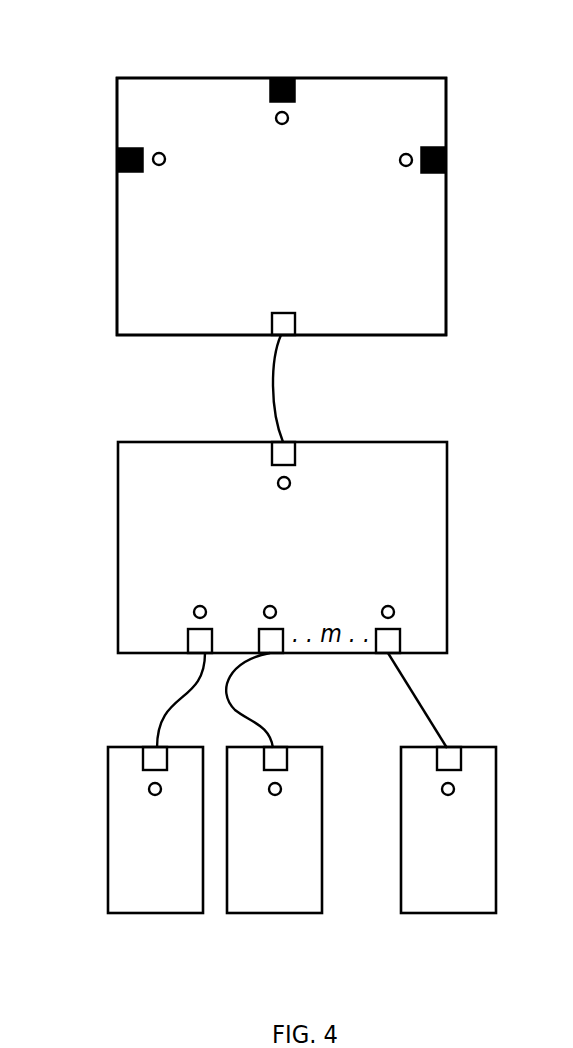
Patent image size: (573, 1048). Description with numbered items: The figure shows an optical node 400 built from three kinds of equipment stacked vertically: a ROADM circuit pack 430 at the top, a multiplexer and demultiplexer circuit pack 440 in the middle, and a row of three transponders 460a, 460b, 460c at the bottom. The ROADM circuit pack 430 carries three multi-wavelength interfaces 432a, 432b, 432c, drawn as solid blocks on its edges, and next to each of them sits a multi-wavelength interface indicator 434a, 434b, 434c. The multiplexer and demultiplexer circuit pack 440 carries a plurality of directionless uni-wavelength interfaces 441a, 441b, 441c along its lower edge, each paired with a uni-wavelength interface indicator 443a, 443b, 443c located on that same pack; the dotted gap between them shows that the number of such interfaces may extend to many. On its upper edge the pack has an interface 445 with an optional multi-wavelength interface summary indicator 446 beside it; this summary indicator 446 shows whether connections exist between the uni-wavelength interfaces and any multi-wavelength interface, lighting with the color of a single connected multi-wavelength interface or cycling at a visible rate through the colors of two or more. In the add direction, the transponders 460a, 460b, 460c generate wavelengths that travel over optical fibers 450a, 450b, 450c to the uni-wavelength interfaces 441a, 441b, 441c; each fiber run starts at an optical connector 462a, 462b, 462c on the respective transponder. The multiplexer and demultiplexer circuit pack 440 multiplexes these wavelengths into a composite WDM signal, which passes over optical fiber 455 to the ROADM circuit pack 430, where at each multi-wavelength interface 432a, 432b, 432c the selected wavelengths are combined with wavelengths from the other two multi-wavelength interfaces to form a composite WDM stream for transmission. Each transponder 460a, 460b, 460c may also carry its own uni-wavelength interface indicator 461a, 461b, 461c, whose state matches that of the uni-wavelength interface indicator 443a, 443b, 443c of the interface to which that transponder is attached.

The optical node 400 is at (58, 44).
The ROADM circuit pack 430 is at (447, 86).
The multi-wavelength interface 432a is at (117, 174).
The multi-wavelength interface 432b is at (447, 175).
The multi-wavelength interface 432c is at (270, 79).
The multi-wavelength interface indicator 434a is at (163, 154).
The multi-wavelength interface indicator 434b is at (401, 166).
The multi-wavelength interface indicator 434c is at (288, 117).
The optical fiber 455 is at (272, 380).
The multiplexer and demultiplexer circuit pack 440 is at (448, 450).
The interface 445 is at (295, 455).
The multi-wavelength interface summary indicator 446 is at (280, 488).
The uni-wavelength interface indicator 443a is at (198, 606).
The uni-wavelength interface indicator 443b is at (268, 606).
The uni-wavelength interface indicator 443c is at (386, 606).
The directionless uni-wavelength interface 441a is at (187, 655).
The directionless uni-wavelength interface 441b is at (284, 654).
The directionless uni-wavelength interface 441c is at (400, 640).
The optical fiber 450a is at (168, 715).
The optical fiber 450b is at (260, 722).
The optical fiber 450c is at (425, 712).
The transponder 460a is at (157, 913).
The transponder 460b is at (272, 913).
The transponder 460c is at (442, 913).
The uni-wavelength interface indicator 461a is at (159, 795).
The uni-wavelength interface indicator 461b is at (279, 795).
The uni-wavelength interface indicator 461c is at (452, 795).
The optical connector 462a is at (145, 770).
The optical connector 462b is at (265, 770).
The optical connector 462c is at (439, 770).